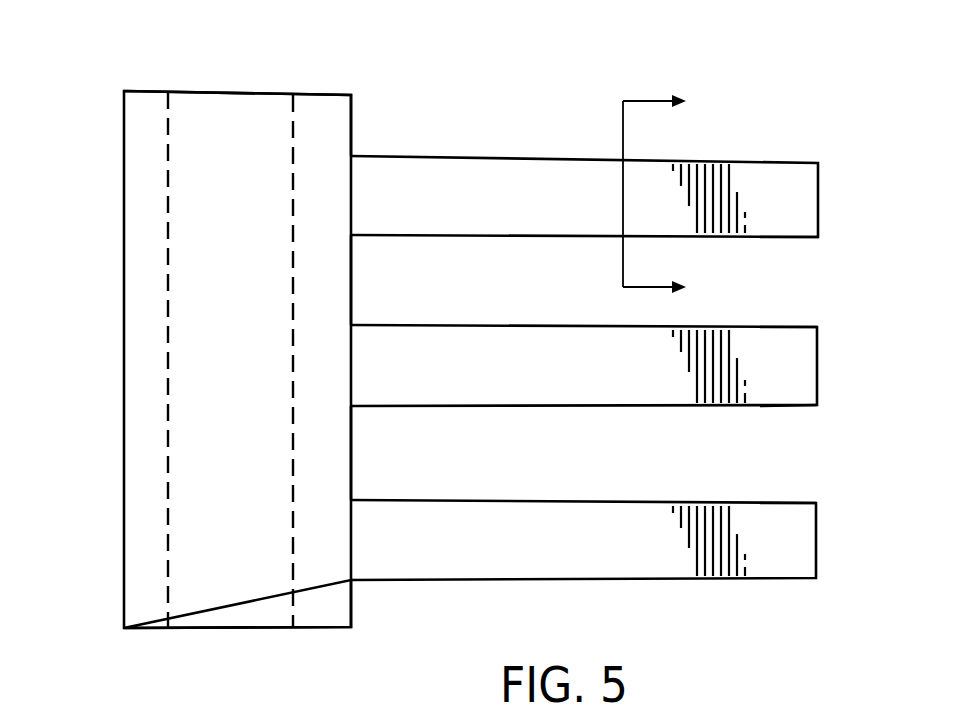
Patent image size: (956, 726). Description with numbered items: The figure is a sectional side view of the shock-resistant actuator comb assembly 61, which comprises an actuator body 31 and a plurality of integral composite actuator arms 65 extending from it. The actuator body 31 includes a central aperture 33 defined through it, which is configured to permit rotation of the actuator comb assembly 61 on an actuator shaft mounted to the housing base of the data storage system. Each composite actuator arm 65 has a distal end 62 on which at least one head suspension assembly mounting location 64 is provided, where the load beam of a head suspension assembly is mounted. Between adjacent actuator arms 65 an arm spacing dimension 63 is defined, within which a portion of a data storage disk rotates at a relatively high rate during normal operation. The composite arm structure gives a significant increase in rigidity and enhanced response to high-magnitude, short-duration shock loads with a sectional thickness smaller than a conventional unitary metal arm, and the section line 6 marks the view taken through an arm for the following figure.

The section line for FIG. 6 is at (665, 194).
The actuator body 31 is at (124, 163).
The central aperture 33 is at (193, 600).
The actuator comb assembly 61 is at (215, 77).
The distal end 62 is at (818, 190).
The arm spacing dimension 63 is at (444, 236).
The HSA mounting location 64 is at (788, 237).
The composite actuator arm 65 is at (522, 209).